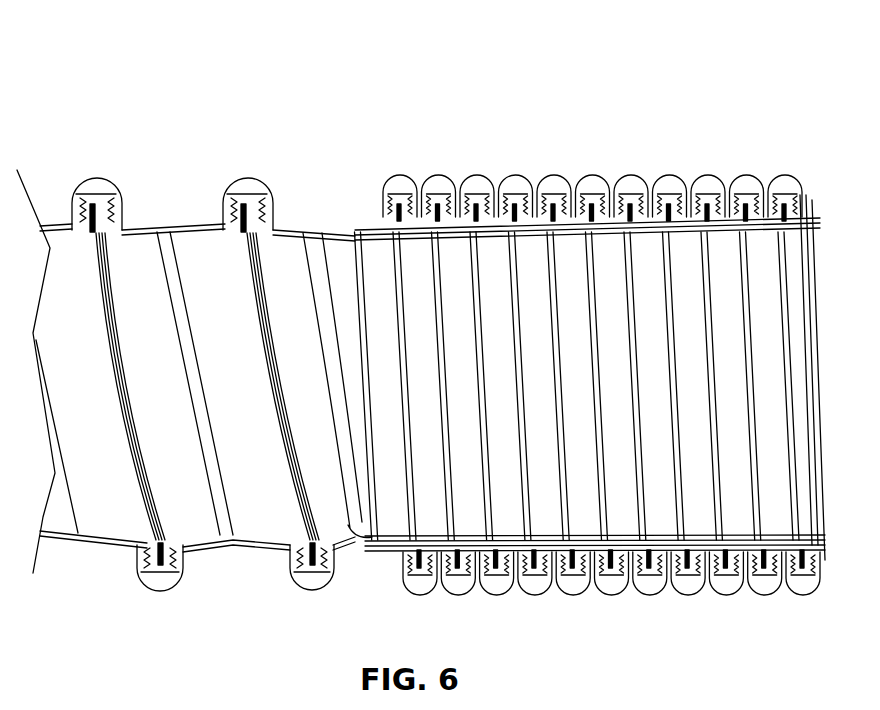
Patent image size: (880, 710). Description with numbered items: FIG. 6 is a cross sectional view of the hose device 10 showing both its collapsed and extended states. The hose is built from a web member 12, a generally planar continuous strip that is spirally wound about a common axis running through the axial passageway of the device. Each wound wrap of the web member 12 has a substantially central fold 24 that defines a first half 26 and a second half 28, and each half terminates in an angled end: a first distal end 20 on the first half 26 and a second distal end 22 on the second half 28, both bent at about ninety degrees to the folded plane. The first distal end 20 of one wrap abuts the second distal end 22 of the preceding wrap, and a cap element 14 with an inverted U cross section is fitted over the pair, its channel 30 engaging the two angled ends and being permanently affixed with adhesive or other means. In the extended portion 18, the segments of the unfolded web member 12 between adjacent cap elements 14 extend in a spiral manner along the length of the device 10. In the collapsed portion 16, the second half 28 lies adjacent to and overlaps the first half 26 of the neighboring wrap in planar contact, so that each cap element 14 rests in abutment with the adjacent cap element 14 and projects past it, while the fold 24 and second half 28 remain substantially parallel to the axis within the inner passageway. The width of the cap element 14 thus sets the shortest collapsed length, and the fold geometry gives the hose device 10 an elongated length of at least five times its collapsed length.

The hose device 10 is at (224, 73).
The web member 12 is at (240, 588).
The cap element 14 is at (550, 175).
The collapsed portion 16 is at (637, 612).
The extended portion 18 is at (48, 625).
The first distal end 20 is at (320, 556).
The second distal end 22 is at (311, 566).
The central fold 24 is at (353, 532).
The first half 26 is at (482, 545).
The second half 28 is at (342, 214).
The channel 30 is at (320, 574).